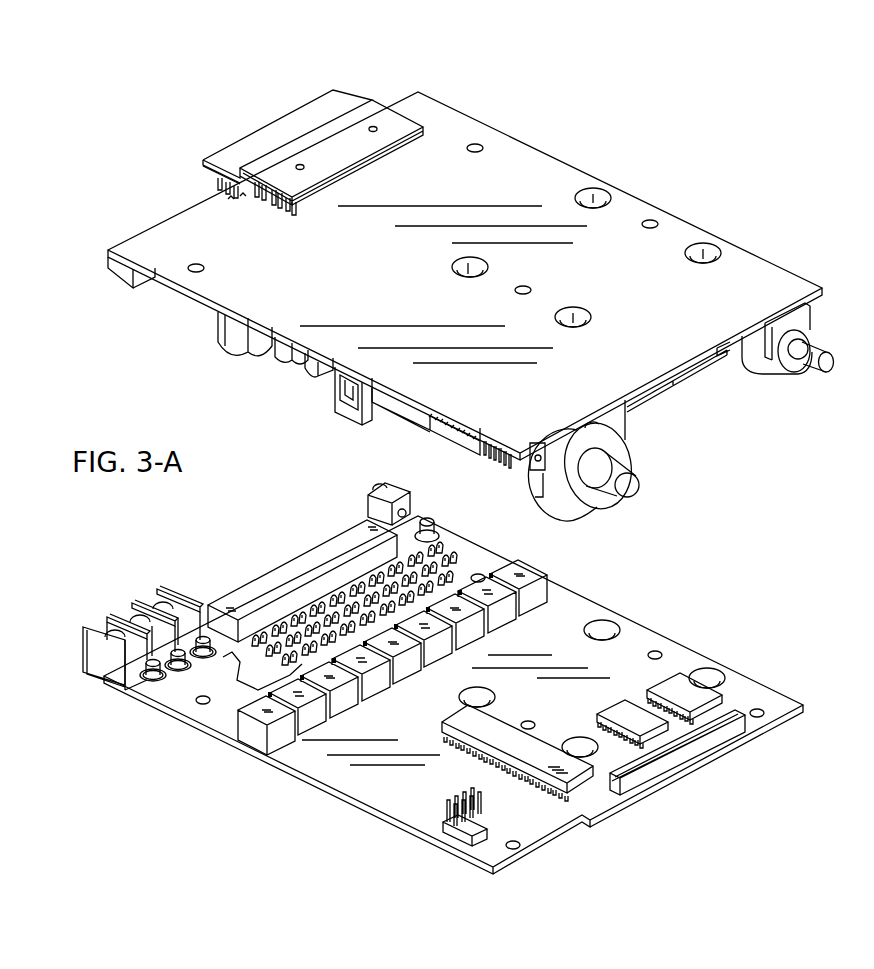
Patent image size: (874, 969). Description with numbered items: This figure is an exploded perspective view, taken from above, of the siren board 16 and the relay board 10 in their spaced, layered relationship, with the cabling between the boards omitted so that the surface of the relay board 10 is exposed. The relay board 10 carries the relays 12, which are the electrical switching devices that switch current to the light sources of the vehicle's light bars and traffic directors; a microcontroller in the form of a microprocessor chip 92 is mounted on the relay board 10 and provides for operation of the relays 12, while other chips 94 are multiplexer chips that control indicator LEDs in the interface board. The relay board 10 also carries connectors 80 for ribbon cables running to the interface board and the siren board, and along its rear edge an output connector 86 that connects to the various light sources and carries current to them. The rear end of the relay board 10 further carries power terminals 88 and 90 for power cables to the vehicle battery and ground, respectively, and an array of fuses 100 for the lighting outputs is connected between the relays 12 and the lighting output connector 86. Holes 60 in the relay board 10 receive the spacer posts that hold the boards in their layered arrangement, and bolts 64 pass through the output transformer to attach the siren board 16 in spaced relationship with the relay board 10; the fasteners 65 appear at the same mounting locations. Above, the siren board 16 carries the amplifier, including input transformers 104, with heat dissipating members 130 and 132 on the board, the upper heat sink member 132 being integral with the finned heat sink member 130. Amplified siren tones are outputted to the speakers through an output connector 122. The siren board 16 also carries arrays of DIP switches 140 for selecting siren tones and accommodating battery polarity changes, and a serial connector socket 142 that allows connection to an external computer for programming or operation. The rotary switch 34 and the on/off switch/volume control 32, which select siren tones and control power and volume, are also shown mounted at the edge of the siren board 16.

The relay board 10 is at (763, 685).
The relays 12 is at (247, 733).
The siren board 16 is at (753, 257).
The on/off switch/volume control 32 is at (808, 333).
The rotary switch 34 is at (630, 455).
The holes 60 is at (580, 747).
The bolts 64 is at (702, 255).
The fasteners 65 is at (567, 310).
The connectors 80 is at (457, 840).
The output connector 86 is at (308, 562).
The power terminal 88 is at (138, 610).
The power terminal 90 is at (370, 495).
The microprocessor chip 92 is at (517, 753).
The multiplexer chips 94 is at (652, 689).
The fuses 100 is at (328, 622).
The input transformers 104 is at (322, 363).
The output connector 122 is at (118, 267).
The finned heat sink member 130 is at (212, 187).
The heat sink member 132 is at (380, 107).
The DIP switches 140 is at (470, 437).
The RS 232 connector socket 142 is at (362, 418).